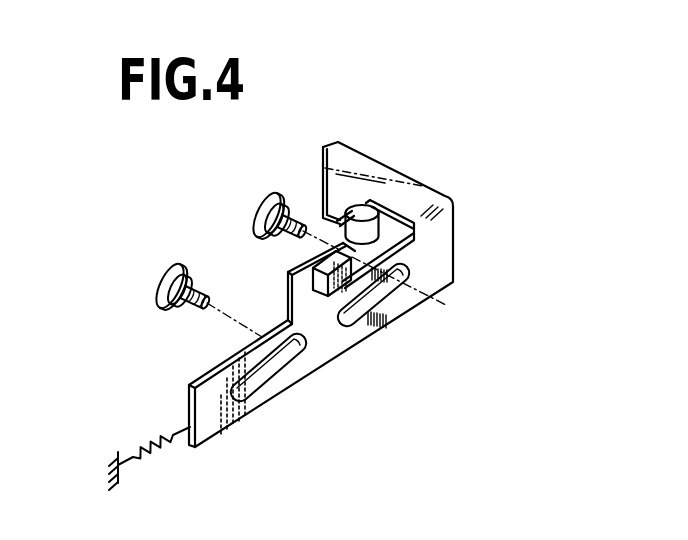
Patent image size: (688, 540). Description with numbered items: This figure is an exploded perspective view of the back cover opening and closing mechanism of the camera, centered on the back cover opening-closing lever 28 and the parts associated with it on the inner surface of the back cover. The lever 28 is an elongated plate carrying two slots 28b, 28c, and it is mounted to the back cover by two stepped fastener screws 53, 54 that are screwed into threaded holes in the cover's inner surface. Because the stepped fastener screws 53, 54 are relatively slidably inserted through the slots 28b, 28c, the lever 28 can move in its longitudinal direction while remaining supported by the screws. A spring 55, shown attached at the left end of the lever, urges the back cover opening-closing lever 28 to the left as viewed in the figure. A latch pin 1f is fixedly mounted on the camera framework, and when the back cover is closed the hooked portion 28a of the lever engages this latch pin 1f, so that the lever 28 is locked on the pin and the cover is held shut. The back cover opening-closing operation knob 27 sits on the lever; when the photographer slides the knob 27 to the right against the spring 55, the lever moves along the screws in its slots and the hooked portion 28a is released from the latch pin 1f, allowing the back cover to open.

The latch pin 1f is at (370, 200).
The back cover opening-closing operation knob 27 is at (289, 288).
The back cover opening-closing lever 28 is at (208, 432).
The hooked portion 28a is at (323, 192).
The slot 28b is at (386, 287).
The slot 28c is at (271, 360).
The stepped fastener screw 53 is at (253, 213).
The stepped fastener screw 54 is at (167, 265).
The spring 55 is at (158, 449).